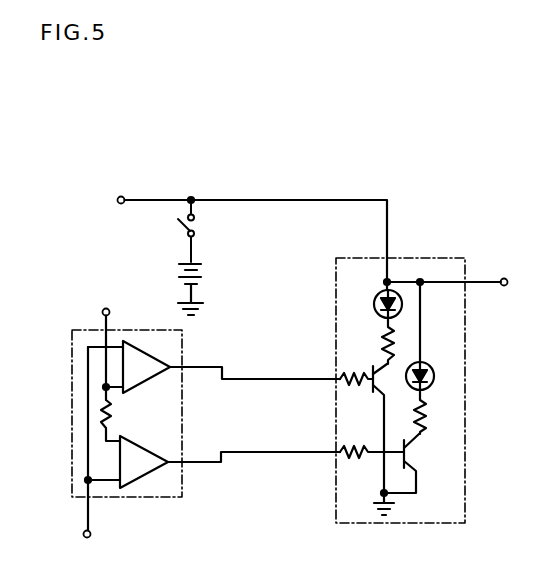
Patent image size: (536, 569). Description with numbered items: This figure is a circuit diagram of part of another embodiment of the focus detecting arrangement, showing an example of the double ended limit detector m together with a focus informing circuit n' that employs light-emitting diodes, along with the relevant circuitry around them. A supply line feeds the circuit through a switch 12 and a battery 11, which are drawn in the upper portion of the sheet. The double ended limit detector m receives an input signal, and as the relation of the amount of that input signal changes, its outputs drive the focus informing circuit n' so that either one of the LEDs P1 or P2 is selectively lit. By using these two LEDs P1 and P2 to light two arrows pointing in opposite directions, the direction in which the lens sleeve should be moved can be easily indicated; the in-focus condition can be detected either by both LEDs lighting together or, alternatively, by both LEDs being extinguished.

The battery 11 is at (199, 278).
The switch 12 is at (199, 229).
The double ended limit detector m is at (193, 394).
The focus informing circuit n' is at (382, 389).
The LED P1 is at (431, 388).
The LED P2 is at (376, 311).